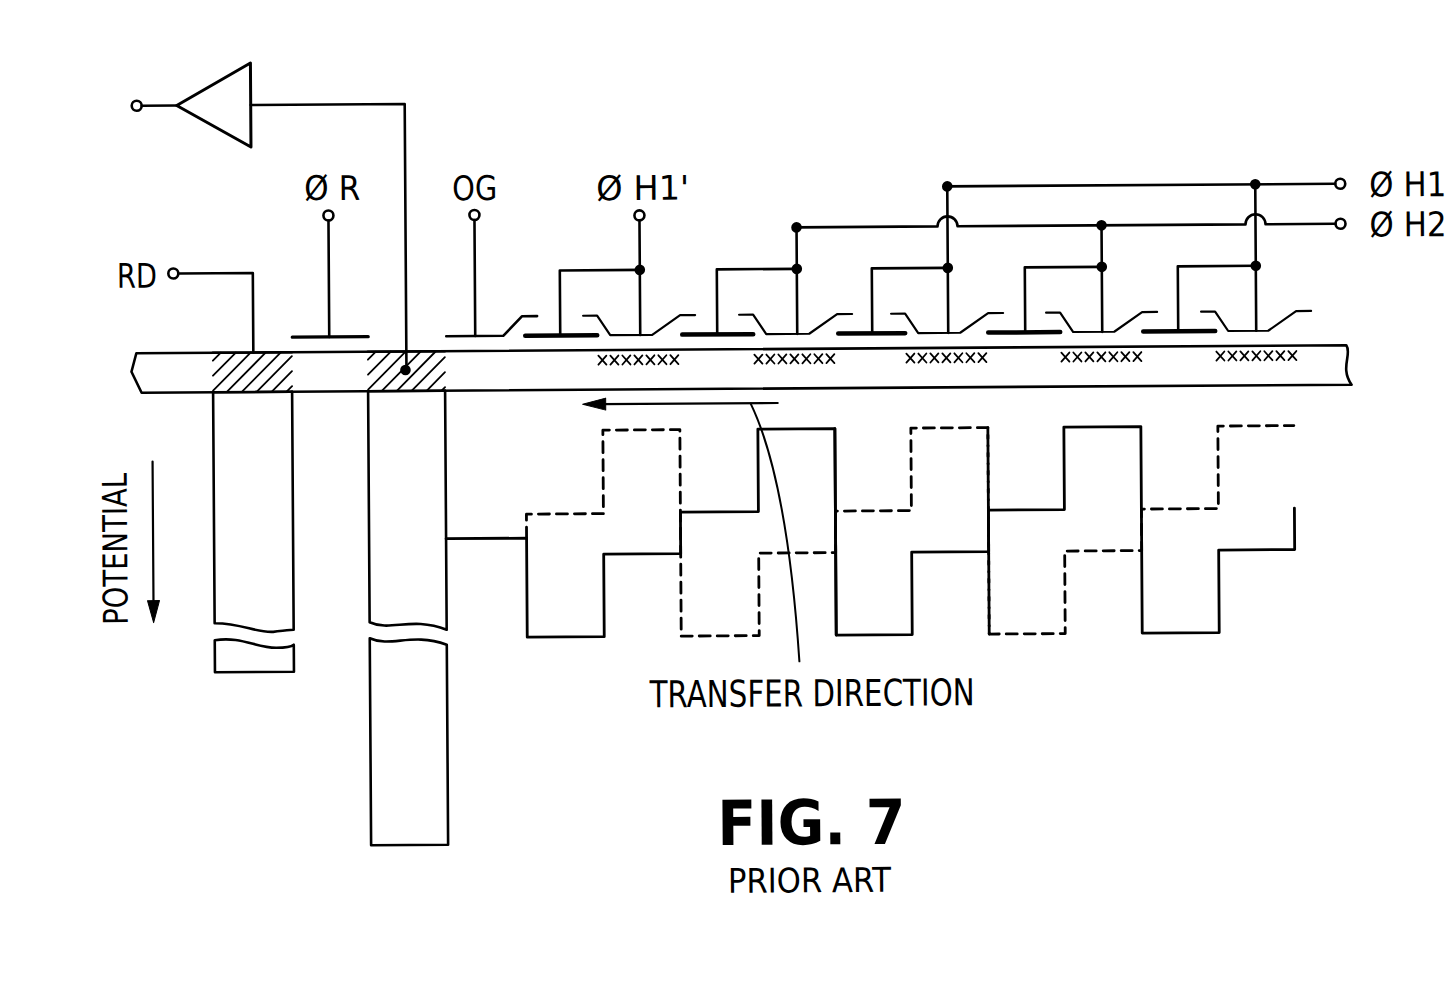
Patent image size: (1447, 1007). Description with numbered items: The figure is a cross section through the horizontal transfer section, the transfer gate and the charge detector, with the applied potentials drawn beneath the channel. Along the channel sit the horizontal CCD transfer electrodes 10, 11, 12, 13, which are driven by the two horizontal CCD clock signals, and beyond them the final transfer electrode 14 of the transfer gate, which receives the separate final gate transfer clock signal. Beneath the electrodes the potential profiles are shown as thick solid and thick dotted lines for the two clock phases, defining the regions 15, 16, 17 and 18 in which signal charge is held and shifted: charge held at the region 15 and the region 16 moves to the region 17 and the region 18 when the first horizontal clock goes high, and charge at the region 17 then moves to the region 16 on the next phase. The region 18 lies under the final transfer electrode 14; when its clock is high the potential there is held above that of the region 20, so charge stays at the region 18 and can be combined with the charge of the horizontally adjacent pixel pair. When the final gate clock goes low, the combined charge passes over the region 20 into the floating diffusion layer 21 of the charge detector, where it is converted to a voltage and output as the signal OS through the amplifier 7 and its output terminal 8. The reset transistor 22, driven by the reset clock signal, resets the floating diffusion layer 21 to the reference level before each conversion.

The amplifier 7 is at (219, 70).
The output terminal 8 is at (139, 94).
The electrode 10 is at (1229, 272).
The electrode 11 is at (1106, 334).
The electrode 12 is at (953, 334).
The electrode 13 is at (802, 334).
The final transfer electrode 14 is at (646, 334).
The region 15 is at (1032, 376).
The region 16 is at (717, 378).
The region 17 is at (884, 378).
The region 18 is at (563, 380).
The region 20 is at (488, 387).
The floating diffusion layer 21 is at (419, 385).
The reset transistor 22 is at (344, 333).